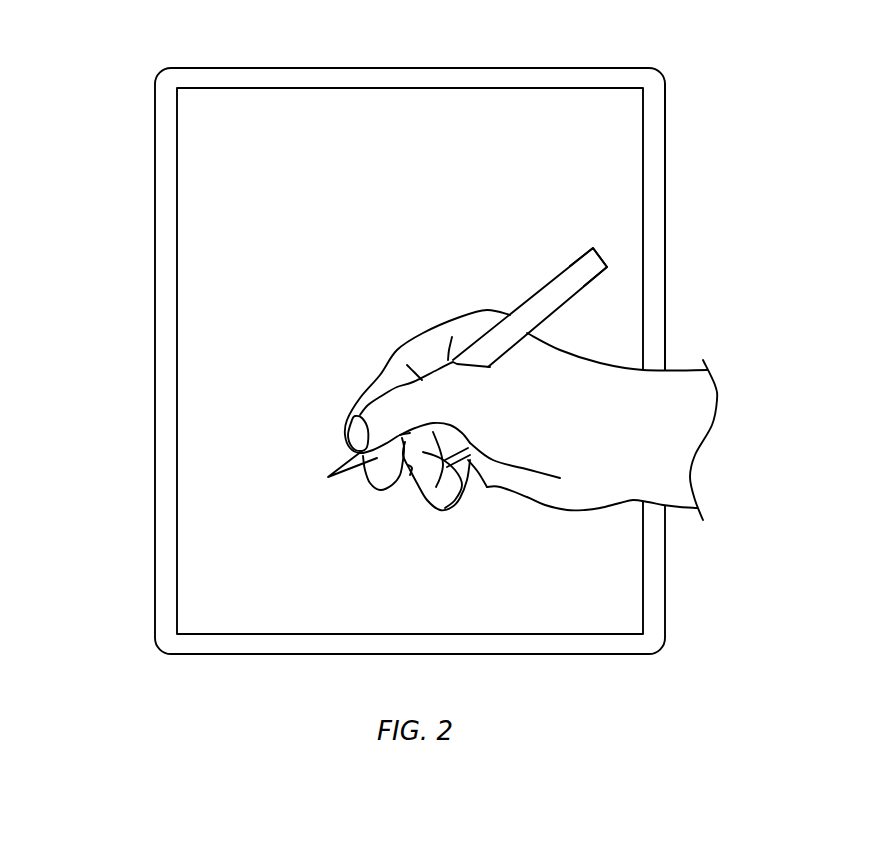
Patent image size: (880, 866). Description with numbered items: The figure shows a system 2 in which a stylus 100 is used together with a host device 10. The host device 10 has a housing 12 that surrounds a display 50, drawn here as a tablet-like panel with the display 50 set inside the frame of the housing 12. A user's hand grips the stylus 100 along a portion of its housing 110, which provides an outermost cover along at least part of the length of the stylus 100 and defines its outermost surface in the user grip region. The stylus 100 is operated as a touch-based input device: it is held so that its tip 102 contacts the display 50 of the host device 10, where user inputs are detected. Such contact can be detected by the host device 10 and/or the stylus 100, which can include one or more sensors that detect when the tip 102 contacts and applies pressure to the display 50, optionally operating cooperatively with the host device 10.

The system 2 is at (67, 132).
The host device 10 is at (407, 77).
The housing 12 is at (650, 148).
The display 50 is at (278, 120).
The stylus 100 is at (547, 281).
The housing 110 is at (582, 272).
The tip 102 is at (328, 463).